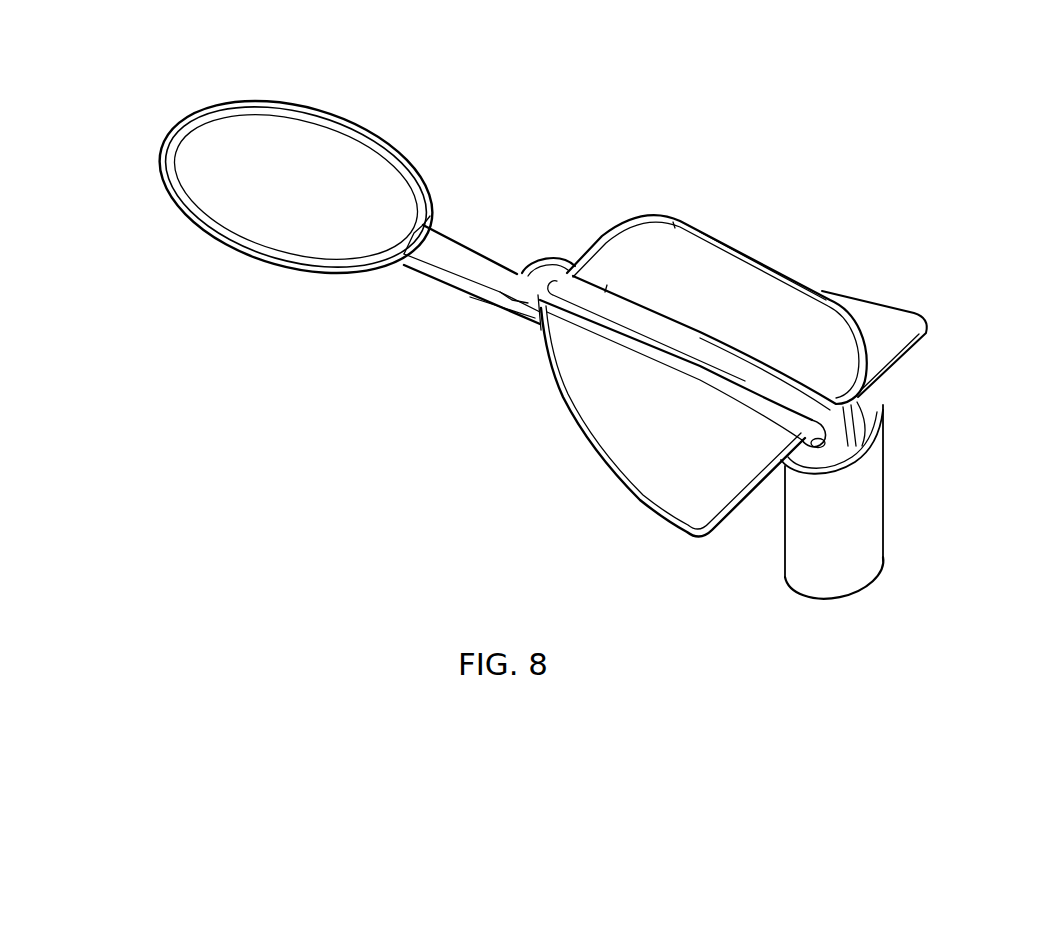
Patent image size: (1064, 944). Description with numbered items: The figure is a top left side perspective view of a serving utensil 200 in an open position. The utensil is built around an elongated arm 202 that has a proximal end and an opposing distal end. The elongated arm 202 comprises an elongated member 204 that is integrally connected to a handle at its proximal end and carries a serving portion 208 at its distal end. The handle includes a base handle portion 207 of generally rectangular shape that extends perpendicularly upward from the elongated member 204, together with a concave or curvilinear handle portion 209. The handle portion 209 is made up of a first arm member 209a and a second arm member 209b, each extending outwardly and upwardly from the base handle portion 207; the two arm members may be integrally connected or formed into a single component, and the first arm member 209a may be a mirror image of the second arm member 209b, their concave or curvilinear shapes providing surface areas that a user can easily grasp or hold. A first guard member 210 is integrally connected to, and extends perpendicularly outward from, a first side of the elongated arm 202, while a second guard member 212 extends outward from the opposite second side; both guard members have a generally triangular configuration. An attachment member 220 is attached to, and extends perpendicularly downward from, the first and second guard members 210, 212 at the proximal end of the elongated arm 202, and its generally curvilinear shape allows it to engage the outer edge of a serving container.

The serving utensil 200 is at (794, 49).
The elongated arm 202 is at (551, 165).
The elongated member 204 is at (415, 301).
The base handle portion 207 is at (596, 220).
The serving portion 208 is at (273, 198).
The handle portion 209 is at (707, 279).
The first arm member 209a is at (824, 260).
The second arm member 209b is at (613, 386).
The first guard member 210 is at (935, 356).
The second guard member 212 is at (673, 455).
The attachment member 220 is at (875, 527).